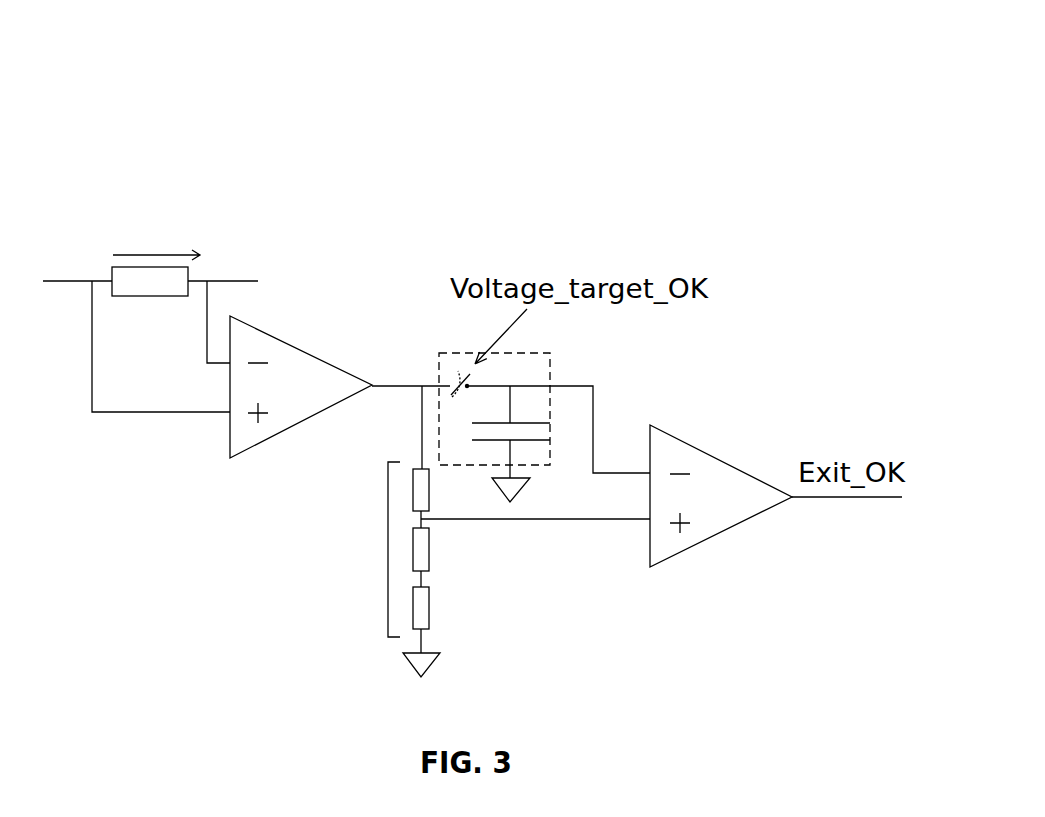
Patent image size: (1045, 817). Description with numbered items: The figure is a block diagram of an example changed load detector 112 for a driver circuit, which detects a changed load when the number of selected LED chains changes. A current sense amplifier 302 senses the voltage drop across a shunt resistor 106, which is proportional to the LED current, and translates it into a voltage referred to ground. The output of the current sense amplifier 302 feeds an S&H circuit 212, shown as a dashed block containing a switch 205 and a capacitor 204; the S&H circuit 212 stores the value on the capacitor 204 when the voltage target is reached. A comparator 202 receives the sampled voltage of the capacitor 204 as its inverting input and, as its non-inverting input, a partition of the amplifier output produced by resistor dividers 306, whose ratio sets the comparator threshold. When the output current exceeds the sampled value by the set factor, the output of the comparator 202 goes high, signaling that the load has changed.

The changed load detector 112 is at (724, 60).
The shunt resistor 106 is at (127, 294).
The current sense amplifier 302 is at (263, 333).
The switch 205 is at (456, 365).
The S&H circuit 212 is at (538, 353).
The capacitor 204 is at (488, 440).
The resistor dividers 306 is at (387, 548).
The comparator 202 is at (683, 439).